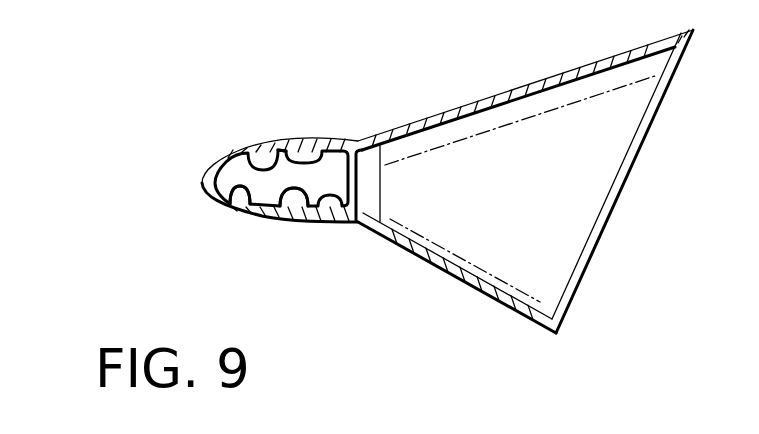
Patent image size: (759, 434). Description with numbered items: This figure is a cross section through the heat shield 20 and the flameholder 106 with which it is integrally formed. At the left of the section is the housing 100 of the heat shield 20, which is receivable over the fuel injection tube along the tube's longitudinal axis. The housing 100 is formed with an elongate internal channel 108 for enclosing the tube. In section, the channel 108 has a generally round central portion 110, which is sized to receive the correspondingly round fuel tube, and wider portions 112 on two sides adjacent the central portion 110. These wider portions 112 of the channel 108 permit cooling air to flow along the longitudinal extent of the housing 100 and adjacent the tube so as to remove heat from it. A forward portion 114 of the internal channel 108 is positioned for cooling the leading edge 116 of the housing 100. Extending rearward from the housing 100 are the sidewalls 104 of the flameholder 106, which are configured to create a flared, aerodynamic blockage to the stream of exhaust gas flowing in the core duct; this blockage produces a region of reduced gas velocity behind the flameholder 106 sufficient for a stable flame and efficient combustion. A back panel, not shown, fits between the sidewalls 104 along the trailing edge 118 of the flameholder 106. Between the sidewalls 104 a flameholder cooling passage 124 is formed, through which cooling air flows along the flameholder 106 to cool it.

The heat shield 20 is at (215, 107).
The housing 100 is at (315, 142).
The sidewalls 104 is at (566, 71).
The flameholder 106 is at (503, 91).
The internal channel 108 is at (292, 148).
The central portion 110 is at (279, 207).
The wider portions 112 is at (246, 156).
The forward portion 114 is at (232, 204).
The leading edge 116 is at (214, 183).
The trailing edge 118 is at (653, 123).
The flameholder cooling passage 124 is at (544, 192).